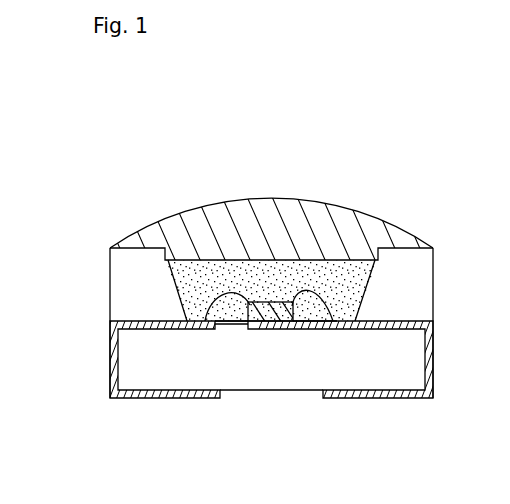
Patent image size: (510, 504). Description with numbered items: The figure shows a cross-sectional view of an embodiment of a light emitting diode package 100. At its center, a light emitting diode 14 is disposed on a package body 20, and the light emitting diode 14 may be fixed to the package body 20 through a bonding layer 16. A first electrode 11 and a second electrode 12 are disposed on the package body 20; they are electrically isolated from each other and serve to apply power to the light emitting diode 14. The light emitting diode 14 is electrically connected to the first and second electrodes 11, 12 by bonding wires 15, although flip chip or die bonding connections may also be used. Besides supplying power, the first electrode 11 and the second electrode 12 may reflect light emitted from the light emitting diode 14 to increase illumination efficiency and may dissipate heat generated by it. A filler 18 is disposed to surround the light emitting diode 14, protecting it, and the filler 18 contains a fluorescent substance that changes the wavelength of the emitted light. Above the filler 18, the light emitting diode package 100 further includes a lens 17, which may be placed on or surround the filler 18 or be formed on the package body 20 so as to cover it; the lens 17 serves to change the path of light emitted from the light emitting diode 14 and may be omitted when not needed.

The light emitting diode package 100 is at (180, 196).
The first electrode 11 is at (162, 400).
The second electrode 12 is at (383, 400).
The light emitting diode 14 is at (280, 302).
The bonding wires 15 is at (230, 322).
The bonding layer 16 is at (270, 302).
The lens 17 is at (270, 198).
The filler 18 is at (195, 303).
The package body 20 is at (162, 293).